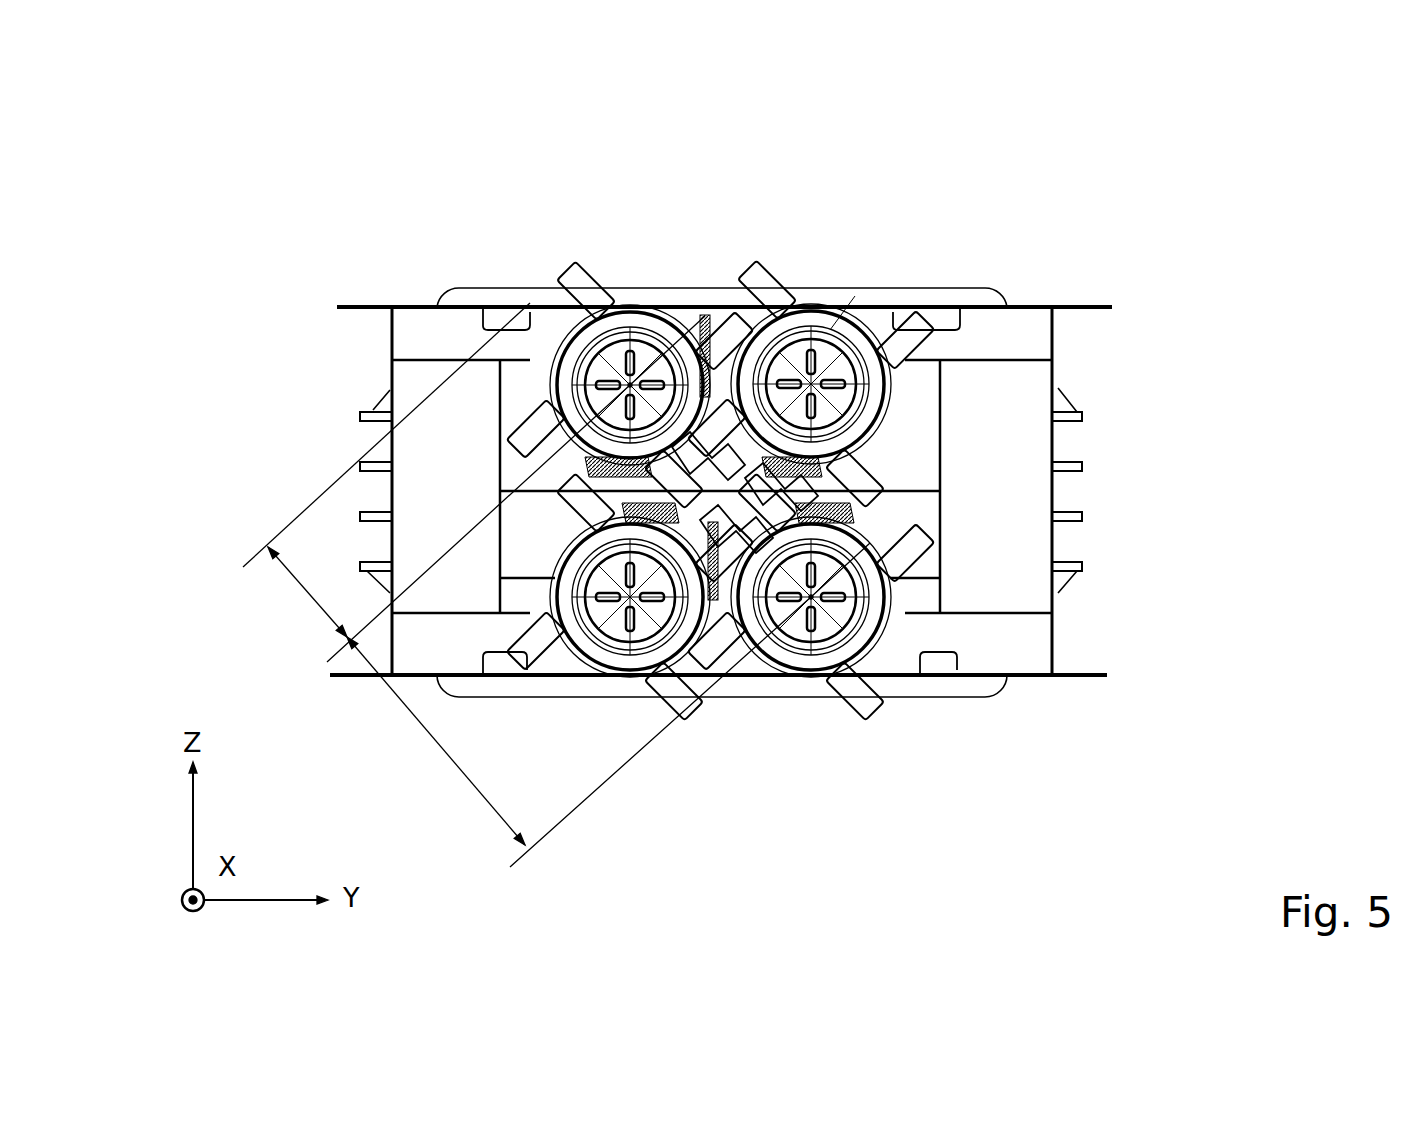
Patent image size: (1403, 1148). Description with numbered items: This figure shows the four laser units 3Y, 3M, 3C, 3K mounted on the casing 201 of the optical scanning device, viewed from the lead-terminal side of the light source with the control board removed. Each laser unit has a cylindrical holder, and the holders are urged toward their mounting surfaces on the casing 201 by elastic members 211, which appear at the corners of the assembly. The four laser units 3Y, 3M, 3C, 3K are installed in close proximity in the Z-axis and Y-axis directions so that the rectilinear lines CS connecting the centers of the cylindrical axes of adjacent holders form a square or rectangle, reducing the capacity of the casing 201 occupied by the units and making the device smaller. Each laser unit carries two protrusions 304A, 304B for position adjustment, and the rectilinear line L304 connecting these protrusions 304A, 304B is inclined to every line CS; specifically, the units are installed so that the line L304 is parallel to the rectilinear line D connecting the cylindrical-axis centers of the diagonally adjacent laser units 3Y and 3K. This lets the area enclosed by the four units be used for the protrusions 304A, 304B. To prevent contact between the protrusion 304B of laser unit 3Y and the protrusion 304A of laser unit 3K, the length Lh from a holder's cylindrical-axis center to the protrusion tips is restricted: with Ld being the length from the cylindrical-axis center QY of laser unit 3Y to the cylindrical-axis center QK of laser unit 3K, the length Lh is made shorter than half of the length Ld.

The casing 201 is at (1006, 420).
The elastic member 211 is at (504, 300).
The laser unit 3Y is at (653, 298).
The laser unit 3M is at (613, 690).
The laser unit 3C is at (858, 300).
The laser unit 3K is at (788, 694).
The protrusion 304A is at (537, 337).
The protrusion 304B is at (723, 365).
The rectilinear line L304 is at (855, 296).
The center of the cylindrical axis QY is at (621, 335).
The center of the cylindrical axis QK is at (816, 650).
The rectilinear line CS is at (735, 390).
The rectilinear line D is at (822, 533).
The length Lh is at (474, 482).
The length Ld is at (608, 705).